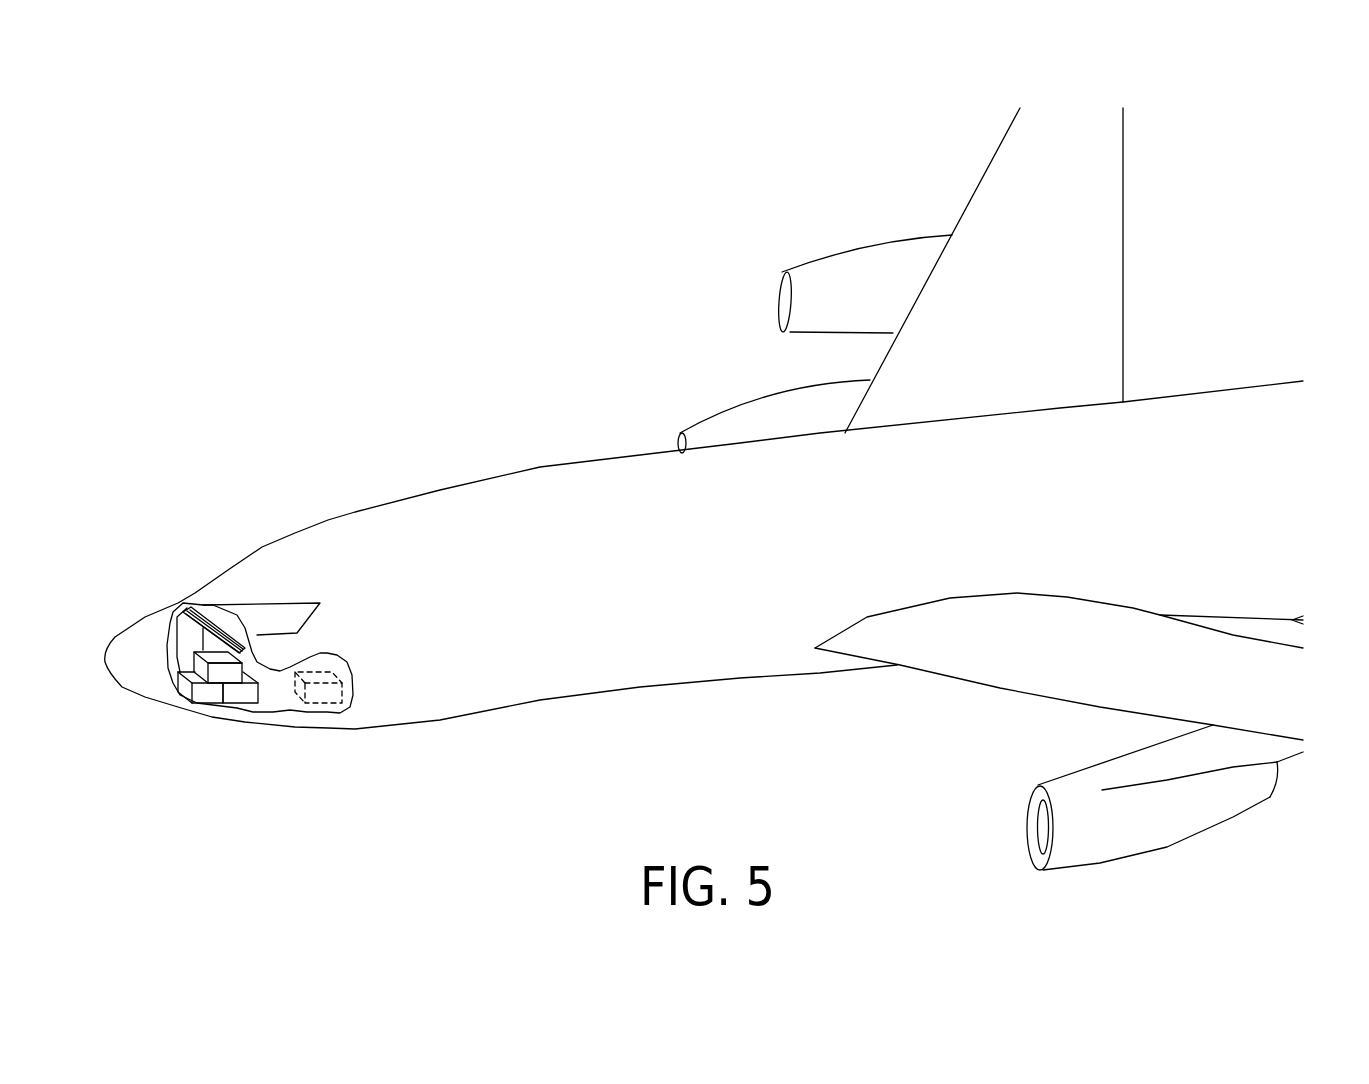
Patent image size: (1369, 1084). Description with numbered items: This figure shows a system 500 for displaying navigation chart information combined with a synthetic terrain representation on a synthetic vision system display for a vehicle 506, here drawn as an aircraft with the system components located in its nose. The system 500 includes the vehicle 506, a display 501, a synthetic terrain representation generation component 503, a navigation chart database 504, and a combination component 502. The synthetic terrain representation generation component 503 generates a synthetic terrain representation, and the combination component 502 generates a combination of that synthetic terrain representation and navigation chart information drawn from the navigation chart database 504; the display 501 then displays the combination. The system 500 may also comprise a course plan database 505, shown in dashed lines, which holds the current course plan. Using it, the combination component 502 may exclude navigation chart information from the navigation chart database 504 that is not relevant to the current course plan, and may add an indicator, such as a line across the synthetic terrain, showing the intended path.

The system 500 is at (345, 323).
The display 501 is at (198, 613).
The combination component 502 is at (180, 659).
The synthetic terrain representation generation component 503 is at (203, 707).
The navigation chart database 504 is at (243, 707).
The course plan database 505 is at (323, 705).
The vehicle 506 is at (630, 457).